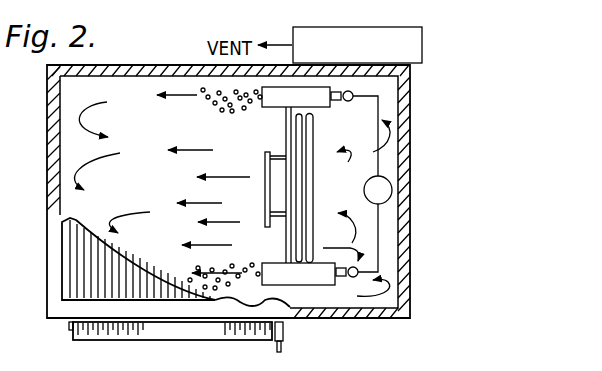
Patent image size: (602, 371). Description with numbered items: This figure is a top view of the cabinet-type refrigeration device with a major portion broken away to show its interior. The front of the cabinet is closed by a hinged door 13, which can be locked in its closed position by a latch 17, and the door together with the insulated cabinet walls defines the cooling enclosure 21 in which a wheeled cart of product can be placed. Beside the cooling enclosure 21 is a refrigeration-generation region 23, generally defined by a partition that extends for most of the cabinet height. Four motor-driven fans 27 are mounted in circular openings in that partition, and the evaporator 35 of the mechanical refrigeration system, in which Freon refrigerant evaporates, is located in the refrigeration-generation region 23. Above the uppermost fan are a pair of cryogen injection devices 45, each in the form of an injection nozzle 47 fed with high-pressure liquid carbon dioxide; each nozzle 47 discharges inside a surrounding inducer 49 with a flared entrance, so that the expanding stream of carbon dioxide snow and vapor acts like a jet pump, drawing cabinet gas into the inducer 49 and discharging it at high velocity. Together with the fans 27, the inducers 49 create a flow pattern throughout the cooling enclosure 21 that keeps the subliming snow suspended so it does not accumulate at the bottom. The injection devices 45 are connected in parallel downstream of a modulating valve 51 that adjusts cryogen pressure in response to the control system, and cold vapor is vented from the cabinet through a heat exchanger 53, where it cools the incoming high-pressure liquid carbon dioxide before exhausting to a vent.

The hinged door 13 is at (215, 336).
The latch 17 is at (284, 336).
The cooling enclosure 21 is at (152, 195).
The refrigeration-generation region 23 is at (360, 146).
The fans 27 is at (265, 192).
The evaporator 35 is at (312, 178).
The cryogen injection devices 45 is at (356, 92).
The injection nozzles 47 is at (367, 184).
The inducer 49 is at (268, 108).
The modulating valve 51 is at (404, 176).
The heat exchanger 53 is at (293, 30).